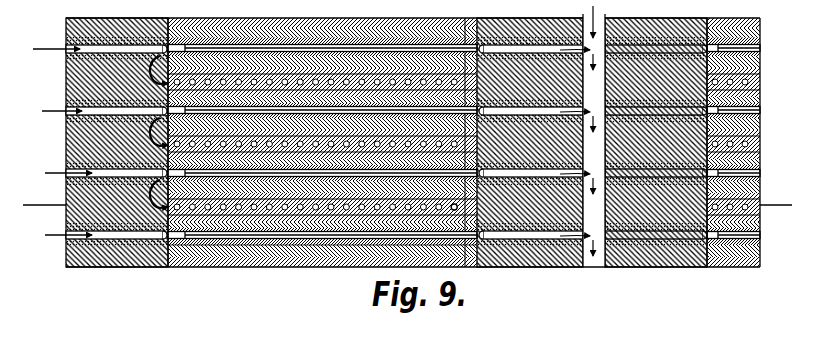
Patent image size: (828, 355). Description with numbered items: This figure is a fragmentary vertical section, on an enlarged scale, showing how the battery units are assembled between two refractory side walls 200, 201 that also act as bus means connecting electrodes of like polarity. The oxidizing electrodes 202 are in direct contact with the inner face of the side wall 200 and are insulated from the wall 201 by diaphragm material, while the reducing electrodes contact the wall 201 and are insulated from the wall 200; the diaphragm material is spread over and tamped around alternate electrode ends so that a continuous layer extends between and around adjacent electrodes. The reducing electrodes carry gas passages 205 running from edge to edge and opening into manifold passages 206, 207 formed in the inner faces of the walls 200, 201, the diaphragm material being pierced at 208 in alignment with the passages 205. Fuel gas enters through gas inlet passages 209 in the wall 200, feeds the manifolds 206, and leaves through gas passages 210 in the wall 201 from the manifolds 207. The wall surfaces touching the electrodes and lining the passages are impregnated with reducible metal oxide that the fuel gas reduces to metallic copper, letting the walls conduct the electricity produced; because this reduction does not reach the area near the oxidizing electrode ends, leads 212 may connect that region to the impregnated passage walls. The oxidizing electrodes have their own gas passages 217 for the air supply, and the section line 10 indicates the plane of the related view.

The section line 10 is at (408, 195).
The side wall 200 is at (80, 80).
The side wall 201 is at (587, 266).
The oxidizing electrodes 202 is at (263, 211).
The gas passages 205 is at (322, 237).
The manifold passages 206 is at (150, 193).
The manifold passages 207 is at (490, 235).
The pierced openings 208 is at (175, 232).
The gas inlet passages 209 is at (104, 167).
The gas passages 210 is at (573, 266).
The leads 212 is at (160, 205).
The gas passages 217 is at (456, 210).